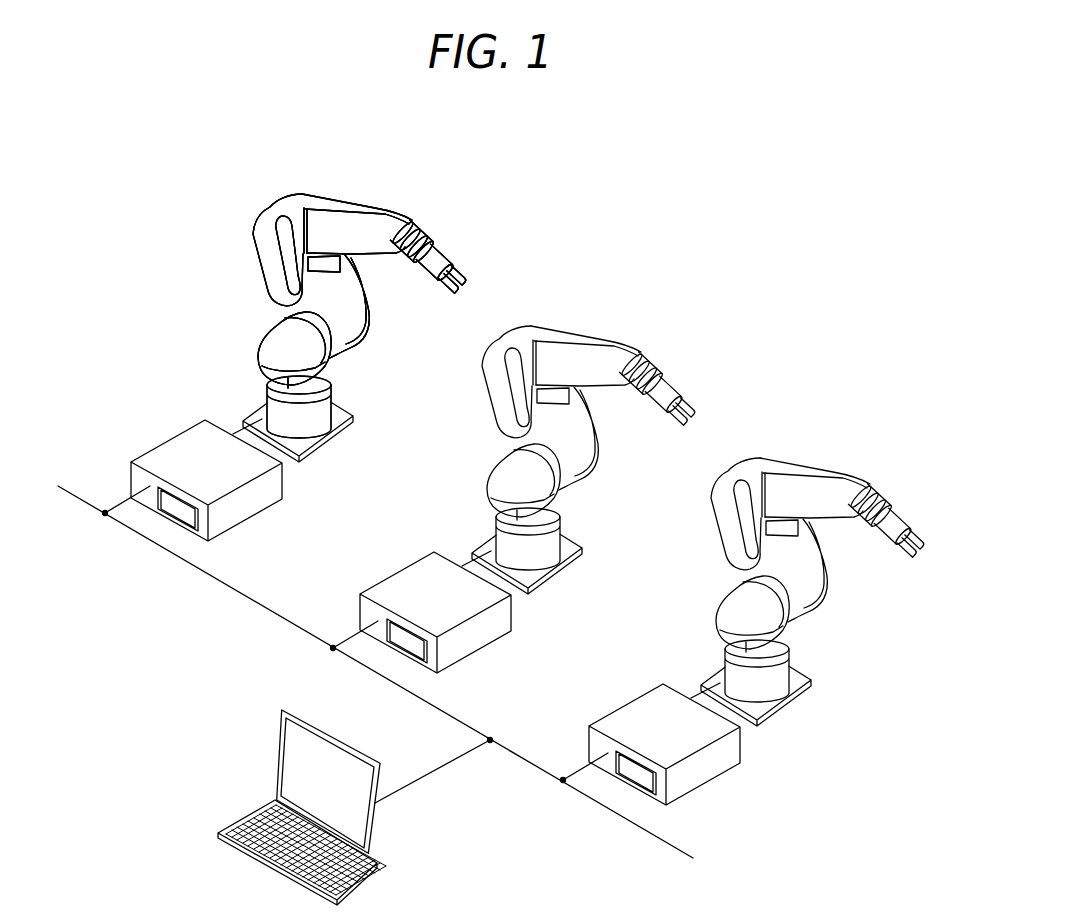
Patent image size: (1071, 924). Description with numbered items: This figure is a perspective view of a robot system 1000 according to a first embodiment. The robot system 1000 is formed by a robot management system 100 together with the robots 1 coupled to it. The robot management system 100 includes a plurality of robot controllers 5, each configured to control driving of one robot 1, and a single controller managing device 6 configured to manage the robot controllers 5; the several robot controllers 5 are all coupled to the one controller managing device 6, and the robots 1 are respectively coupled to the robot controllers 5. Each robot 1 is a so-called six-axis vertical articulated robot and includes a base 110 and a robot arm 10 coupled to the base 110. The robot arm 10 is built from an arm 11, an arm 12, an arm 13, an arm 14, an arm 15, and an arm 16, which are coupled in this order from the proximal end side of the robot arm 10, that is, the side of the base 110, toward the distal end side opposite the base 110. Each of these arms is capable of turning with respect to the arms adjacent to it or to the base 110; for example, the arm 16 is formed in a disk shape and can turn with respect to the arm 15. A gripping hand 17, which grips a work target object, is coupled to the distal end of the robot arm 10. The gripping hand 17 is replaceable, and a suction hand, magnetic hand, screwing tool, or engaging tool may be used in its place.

The robot 1 is at (372, 194).
The robot controller 5 is at (246, 503).
The controller managing device 6 is at (380, 827).
The robot arm 10 is at (268, 191).
The arm 11 is at (277, 360).
The arm 12 is at (276, 261).
The arm 13 is at (291, 228).
The arm 14 is at (327, 229).
The arm 15 is at (417, 218).
The arm 16 is at (431, 236).
The gripping hand 17 is at (424, 285).
The robot management system 100 is at (155, 329).
The base 110 is at (307, 407).
The robot system 1000 is at (727, 201).